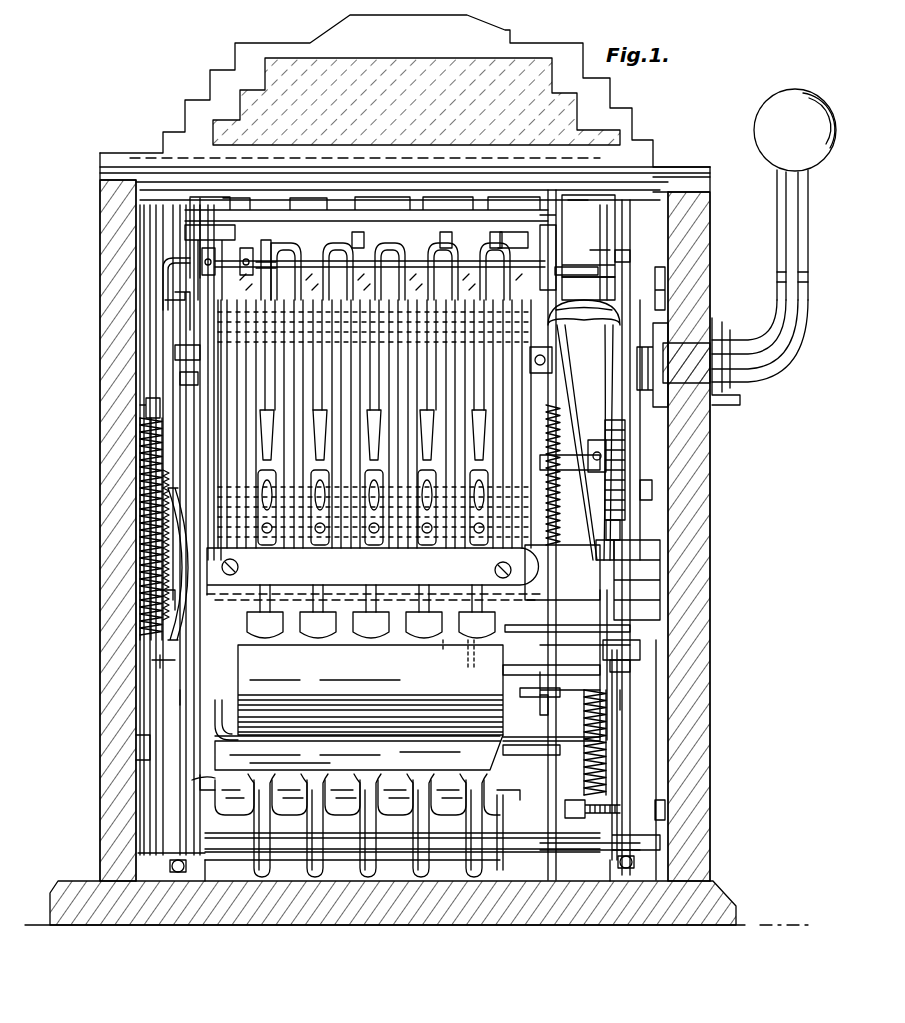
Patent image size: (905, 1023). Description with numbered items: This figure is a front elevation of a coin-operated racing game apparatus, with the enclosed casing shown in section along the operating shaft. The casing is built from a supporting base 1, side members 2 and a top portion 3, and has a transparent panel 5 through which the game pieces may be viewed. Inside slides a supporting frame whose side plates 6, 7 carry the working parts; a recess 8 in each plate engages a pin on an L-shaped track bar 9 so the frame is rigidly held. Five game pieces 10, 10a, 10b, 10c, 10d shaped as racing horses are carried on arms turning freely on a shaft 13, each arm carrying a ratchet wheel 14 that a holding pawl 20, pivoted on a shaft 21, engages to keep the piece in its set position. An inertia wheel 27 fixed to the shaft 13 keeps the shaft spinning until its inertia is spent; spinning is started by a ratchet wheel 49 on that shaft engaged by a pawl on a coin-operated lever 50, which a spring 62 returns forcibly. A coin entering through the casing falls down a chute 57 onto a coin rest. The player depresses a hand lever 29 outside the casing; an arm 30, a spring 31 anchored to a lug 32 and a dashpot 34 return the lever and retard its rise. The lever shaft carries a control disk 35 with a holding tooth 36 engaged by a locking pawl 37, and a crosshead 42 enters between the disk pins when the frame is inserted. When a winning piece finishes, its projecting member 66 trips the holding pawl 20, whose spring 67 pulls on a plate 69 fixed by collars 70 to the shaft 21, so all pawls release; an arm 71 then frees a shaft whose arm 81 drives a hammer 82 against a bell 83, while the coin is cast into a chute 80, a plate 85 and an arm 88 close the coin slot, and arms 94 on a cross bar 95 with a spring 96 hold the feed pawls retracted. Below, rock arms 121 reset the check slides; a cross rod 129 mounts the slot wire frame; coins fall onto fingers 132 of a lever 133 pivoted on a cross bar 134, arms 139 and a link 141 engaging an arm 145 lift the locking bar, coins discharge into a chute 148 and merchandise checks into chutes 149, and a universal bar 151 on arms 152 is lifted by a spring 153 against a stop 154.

The supporting base 1 is at (328, 907).
The side members 2 is at (120, 655).
The top portion 3 is at (483, 84).
The transparent panel 5 is at (405, 107).
The side plate 6 is at (623, 773).
The side plate 7 is at (192, 780).
The recess 8 is at (177, 883).
The L-shaped track bar 9 is at (207, 880).
The game piece 10 is at (507, 530).
The game piece 10a is at (438, 545).
The game piece 10b is at (384, 545).
The game piece 10c is at (332, 545).
The game piece 10d is at (280, 545).
The shaft 13 is at (565, 455).
The ratchet wheel 14 is at (490, 407).
The holding pawl 20 is at (584, 430).
The shaft 21 is at (588, 272).
The inertia wheel 27 is at (555, 530).
The hand lever 29 is at (779, 125).
The arm 30 is at (147, 413).
The spring 31 is at (143, 473).
The lug 32 is at (162, 658).
The dashpot 34 is at (152, 743).
The control disk 35 is at (690, 300).
The holding tooth 36 is at (672, 297).
The locking pawl 37 is at (697, 240).
The crosshead 42 is at (641, 380).
The ratchet wheel 49 is at (612, 485).
The lever 50 is at (606, 507).
The chute 57 is at (598, 213).
The spring 62 is at (586, 760).
The projecting member 66 is at (488, 425).
The spring 67 is at (500, 245).
The plate 69 is at (362, 248).
The collars 70 is at (267, 217).
The arm 71 is at (548, 267).
The chute 80 is at (612, 522).
The arm 81 is at (165, 298).
The hammer 82 is at (163, 282).
The bell 83 is at (172, 528).
The plate 85 is at (548, 207).
The arm 88 is at (546, 258).
The arms 94 is at (263, 265).
The cross bar 95 is at (350, 217).
The spring 96 is at (567, 530).
The rock arms 121 is at (530, 614).
The cross rod 129 is at (600, 623).
The fingers 132 is at (447, 640).
The lever 133 is at (468, 667).
The cross bar 134 is at (510, 675).
The arms 139 is at (547, 703).
The link 141 is at (217, 407).
The arm 145 is at (210, 218).
The chute 148 is at (359, 707).
The chutes 149 is at (420, 880).
The universal bar 151 is at (517, 693).
The arms 152 is at (182, 690).
The spring 153 is at (600, 657).
The stop 154 is at (630, 667).